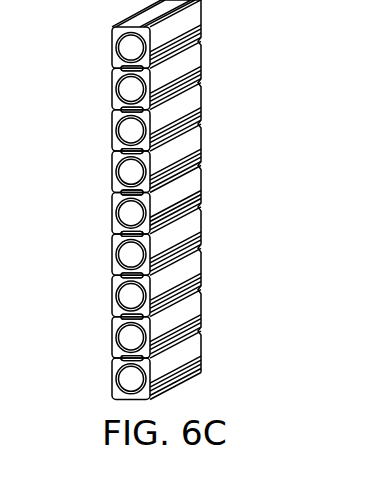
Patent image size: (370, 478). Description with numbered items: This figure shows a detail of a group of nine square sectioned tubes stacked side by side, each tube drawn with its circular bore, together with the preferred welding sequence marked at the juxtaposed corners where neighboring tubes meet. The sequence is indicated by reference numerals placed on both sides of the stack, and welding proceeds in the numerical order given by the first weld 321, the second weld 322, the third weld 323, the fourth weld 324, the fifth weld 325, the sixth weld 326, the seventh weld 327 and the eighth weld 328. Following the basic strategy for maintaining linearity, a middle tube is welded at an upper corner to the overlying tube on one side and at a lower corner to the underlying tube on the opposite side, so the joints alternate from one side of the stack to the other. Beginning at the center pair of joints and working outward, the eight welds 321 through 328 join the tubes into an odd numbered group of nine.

The first weld in the welding sequence 321 is at (112, 192).
The second weld in the welding sequence 322 is at (112, 234).
The third weld in the welding sequence 323 is at (112, 151).
The fourth weld in the welding sequence 324 is at (112, 275).
The fifth weld in the welding sequence 325 is at (112, 110).
The sixth weld in the welding sequence 326 is at (112, 317).
The seventh weld in the welding sequence 327 is at (112, 68).
The eighth weld in the welding sequence 328 is at (112, 358).